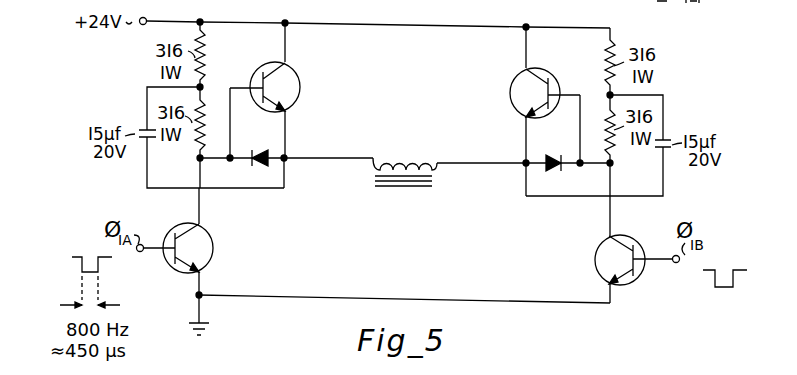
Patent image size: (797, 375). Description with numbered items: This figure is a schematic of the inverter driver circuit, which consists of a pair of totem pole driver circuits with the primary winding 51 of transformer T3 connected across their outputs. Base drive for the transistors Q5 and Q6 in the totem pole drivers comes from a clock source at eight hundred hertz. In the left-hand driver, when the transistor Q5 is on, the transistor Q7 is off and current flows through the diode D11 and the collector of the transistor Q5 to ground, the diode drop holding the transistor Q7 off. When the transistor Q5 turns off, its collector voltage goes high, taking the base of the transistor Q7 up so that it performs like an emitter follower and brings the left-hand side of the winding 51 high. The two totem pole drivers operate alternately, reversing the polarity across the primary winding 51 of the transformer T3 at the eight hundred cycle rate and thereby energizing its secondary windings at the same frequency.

The primary winding 51 is at (372, 172).
The transformer T3 is at (387, 164).
The transistor Q5 is at (201, 239).
The transistor Q6 is at (600, 241).
The transistor Q7 is at (253, 72).
The diode D11 is at (274, 152).